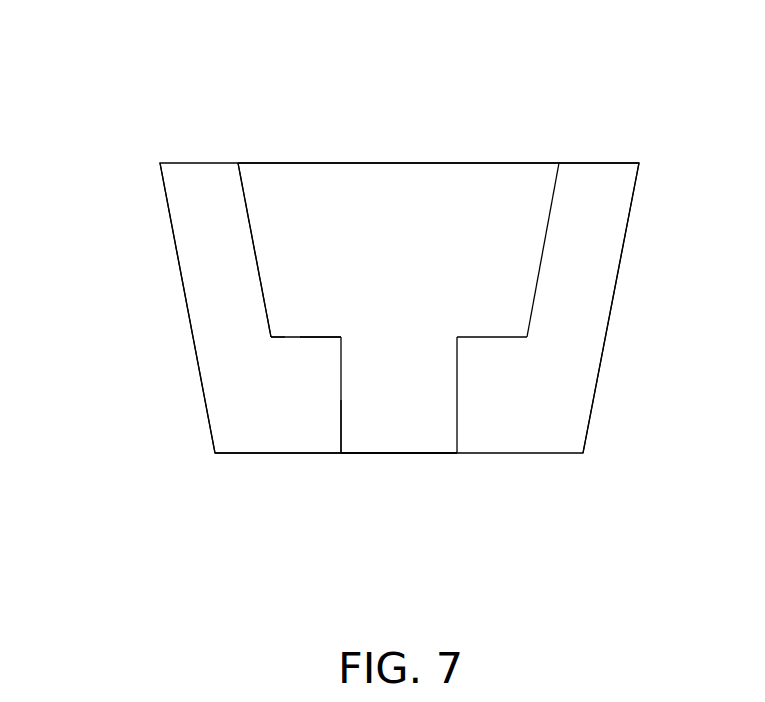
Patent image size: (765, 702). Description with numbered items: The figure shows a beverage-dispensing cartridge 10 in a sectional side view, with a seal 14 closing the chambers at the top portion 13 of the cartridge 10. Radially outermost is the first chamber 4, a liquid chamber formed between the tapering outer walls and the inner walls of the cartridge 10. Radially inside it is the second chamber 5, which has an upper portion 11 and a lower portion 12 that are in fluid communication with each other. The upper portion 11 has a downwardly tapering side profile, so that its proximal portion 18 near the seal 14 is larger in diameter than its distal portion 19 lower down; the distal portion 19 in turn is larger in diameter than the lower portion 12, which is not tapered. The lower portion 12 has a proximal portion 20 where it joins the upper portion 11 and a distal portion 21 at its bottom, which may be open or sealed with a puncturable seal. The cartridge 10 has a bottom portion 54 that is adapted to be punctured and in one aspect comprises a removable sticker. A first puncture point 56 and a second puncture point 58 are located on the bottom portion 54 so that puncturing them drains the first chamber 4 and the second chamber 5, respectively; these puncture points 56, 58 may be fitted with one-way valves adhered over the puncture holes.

The first chamber 4 is at (220, 412).
The second chamber 5 is at (399, 315).
The cartridge 10 is at (158, 305).
The upper portion of the second chamber 11 is at (268, 253).
The lower portion of the second chamber 12 is at (399, 395).
The top portion of the cartridge 13 is at (602, 144).
The seal 14 is at (401, 162).
The proximal portion of the upper portion 18 is at (238, 163).
The distal portion of the upper portion 19 is at (269, 335).
The proximal portion of the lower portion 20 is at (340, 339).
The distal portion of the lower portion 21 is at (338, 450).
The bottom portion 54 is at (420, 454).
The first puncture point 56 is at (258, 454).
The second puncture point 58 is at (368, 454).